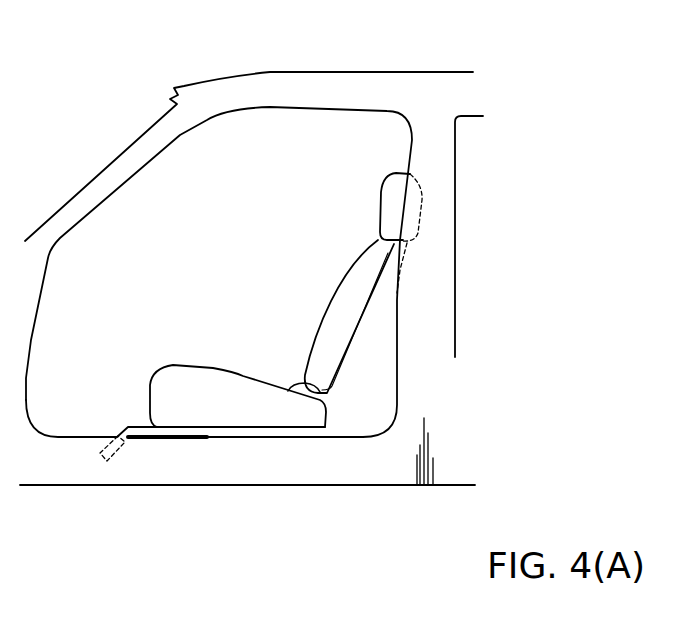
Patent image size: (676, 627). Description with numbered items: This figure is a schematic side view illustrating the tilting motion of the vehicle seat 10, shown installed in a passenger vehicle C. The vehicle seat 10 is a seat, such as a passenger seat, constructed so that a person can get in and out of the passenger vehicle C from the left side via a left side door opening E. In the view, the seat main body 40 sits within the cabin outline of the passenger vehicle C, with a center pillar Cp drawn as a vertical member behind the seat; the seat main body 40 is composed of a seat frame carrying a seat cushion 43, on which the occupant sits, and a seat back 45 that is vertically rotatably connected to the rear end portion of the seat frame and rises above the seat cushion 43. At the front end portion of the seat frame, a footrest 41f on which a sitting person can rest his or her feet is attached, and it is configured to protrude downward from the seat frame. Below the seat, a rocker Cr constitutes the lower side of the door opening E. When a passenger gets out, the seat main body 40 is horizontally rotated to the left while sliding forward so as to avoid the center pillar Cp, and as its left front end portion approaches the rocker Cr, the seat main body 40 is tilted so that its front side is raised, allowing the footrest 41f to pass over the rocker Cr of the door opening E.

The passenger vehicle C is at (362, 62).
The center pillar Cp is at (432, 256).
The left side door opening E is at (388, 332).
The rocker Cr is at (247, 463).
The vehicle seat 10 is at (330, 300).
The seat main body 40 is at (330, 300).
The seat cushion 43 is at (225, 382).
The seat back 45 is at (407, 283).
The footrest 41f is at (98, 436).